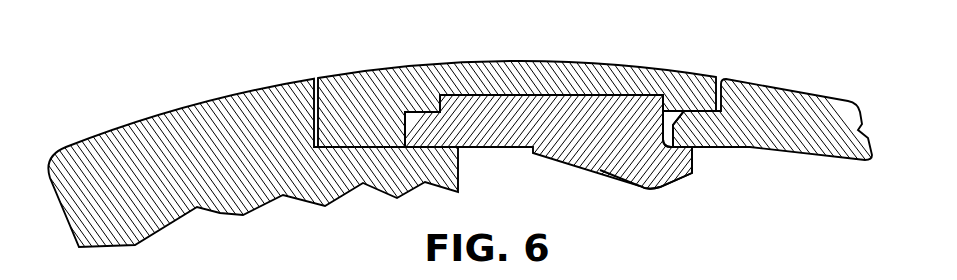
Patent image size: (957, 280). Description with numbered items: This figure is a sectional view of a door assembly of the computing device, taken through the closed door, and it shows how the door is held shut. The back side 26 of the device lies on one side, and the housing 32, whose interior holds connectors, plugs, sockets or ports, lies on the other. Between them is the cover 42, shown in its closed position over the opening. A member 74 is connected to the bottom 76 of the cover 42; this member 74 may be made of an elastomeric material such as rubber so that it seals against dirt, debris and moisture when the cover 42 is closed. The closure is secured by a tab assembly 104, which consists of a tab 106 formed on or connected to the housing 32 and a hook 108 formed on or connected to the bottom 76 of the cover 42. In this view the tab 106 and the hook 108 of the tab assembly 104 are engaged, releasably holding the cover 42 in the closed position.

The back side 26 is at (180, 106).
The cover 42 is at (512, 63).
The housing 32 is at (803, 90).
The member 74 is at (505, 148).
The bottom of cover 76 is at (706, 119).
The tab 106 is at (663, 138).
The tab assembly 104 is at (693, 150).
The hook 108 is at (676, 182).